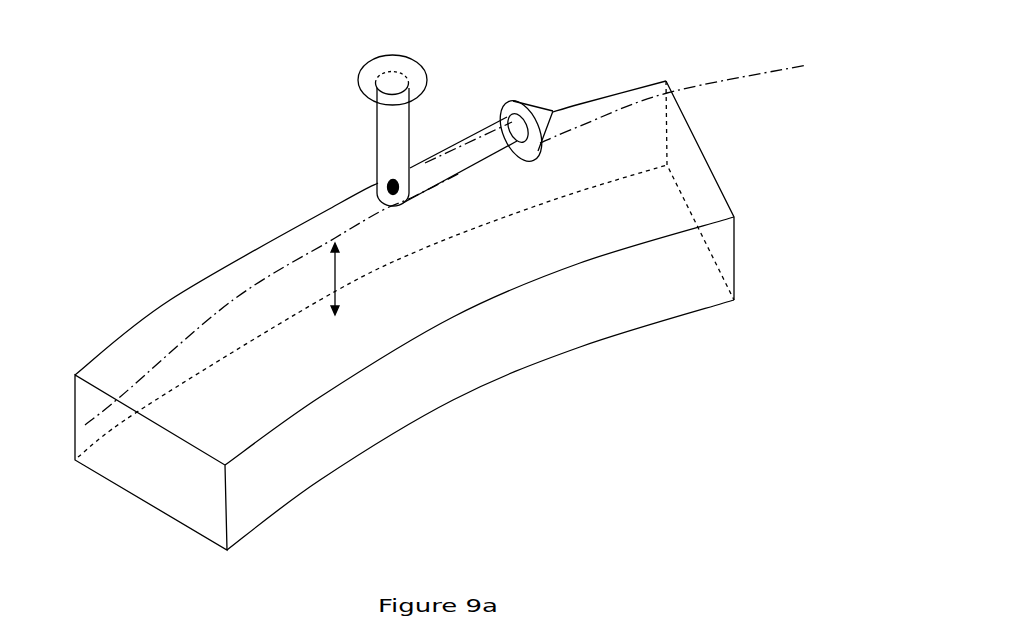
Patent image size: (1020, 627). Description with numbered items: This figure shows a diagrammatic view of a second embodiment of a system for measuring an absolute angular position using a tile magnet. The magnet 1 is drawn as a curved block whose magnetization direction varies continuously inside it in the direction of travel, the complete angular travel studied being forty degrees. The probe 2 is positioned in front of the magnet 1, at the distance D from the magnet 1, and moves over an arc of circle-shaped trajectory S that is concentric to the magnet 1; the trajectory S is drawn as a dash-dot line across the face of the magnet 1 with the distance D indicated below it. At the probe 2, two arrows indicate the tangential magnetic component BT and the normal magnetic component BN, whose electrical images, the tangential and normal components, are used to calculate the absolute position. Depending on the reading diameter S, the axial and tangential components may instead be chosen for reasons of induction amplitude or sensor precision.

The magnet 1 is at (503, 333).
The probe 2 is at (386, 184).
The arc of circle-shaped trajectory S is at (446, 238).
The distance D is at (323, 279).
The normal magnetic component BN is at (401, 130).
The tangential magnetic component BT is at (478, 144).